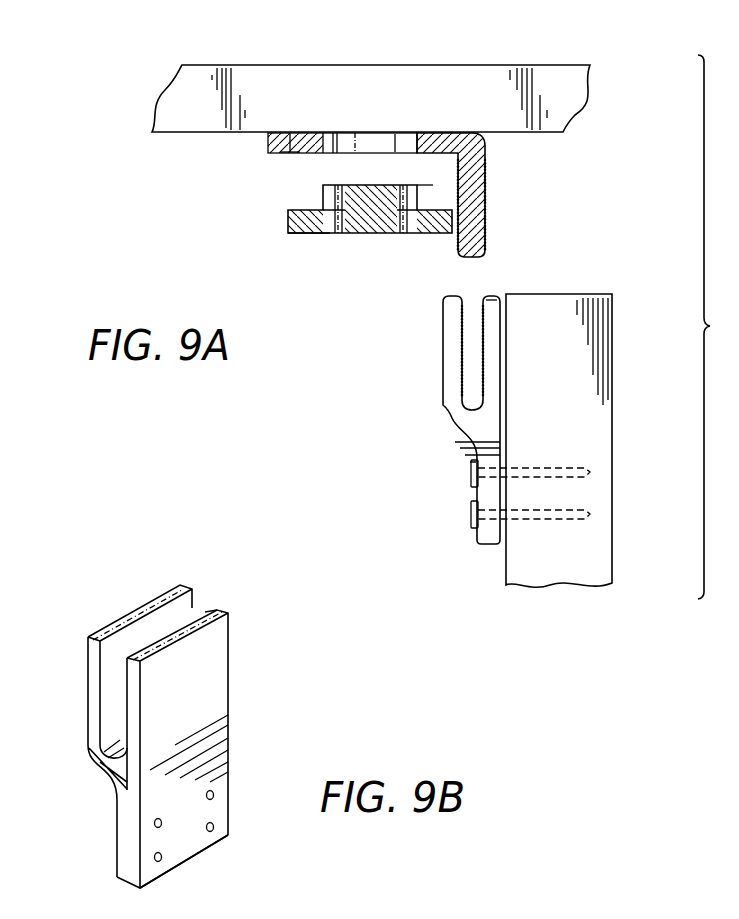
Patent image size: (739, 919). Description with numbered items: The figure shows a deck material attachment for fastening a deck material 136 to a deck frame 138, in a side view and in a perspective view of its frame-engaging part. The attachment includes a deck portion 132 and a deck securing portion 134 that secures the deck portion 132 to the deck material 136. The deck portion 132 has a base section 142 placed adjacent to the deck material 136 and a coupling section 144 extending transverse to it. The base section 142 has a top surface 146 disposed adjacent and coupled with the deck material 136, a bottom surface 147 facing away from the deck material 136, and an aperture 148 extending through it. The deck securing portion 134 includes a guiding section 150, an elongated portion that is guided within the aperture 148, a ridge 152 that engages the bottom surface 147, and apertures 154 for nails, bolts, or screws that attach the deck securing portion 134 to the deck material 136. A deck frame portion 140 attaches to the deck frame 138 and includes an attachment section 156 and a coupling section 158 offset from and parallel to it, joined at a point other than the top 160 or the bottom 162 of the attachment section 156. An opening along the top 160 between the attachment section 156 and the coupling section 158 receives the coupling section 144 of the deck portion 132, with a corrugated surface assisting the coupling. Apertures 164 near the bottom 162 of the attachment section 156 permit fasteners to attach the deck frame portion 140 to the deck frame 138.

In FIG. 9A, the deck portion 132 is at (437, 131).
In FIG. 9A, the deck securing portion 134 is at (306, 234).
In FIG. 9A, the deck material 136 is at (502, 113).
In FIG. 9A, the deck frame 138 is at (575, 372).
In FIG. 9A, the deck frame portion 140 is at (479, 408).
In FIG. 9B, the deck frame portion 140 is at (164, 711).
In FIG. 9A, the base section 142 is at (278, 142).
In FIG. 9A, the coupling section 144 is at (482, 203).
In FIG. 9A, the top surface 146 is at (302, 133).
In FIG. 9A, the bottom surface 147 is at (282, 153).
In FIG. 9A, the aperture 148 is at (398, 133).
In FIG. 9A, the guiding section 150 is at (416, 188).
In FIG. 9A, the ridge 152 is at (328, 244).
In FIG. 9A, the apertures 154 is at (400, 233).
In FIG. 9A, the attachment section 156 is at (508, 347).
In FIG. 9B, the attachment section 156 is at (214, 688).
In FIG. 9A, the coupling section 158 is at (445, 349).
In FIG. 9B, the coupling section 158 is at (93, 692).
In FIG. 9A, the top 160 is at (497, 297).
In FIG. 9B, the top 160 is at (218, 603).
In FIG. 9A, the bottom 162 is at (490, 538).
In FIG. 9B, the bottom 162 is at (187, 863).
In FIG. 9B, the apertures 164 is at (215, 826).